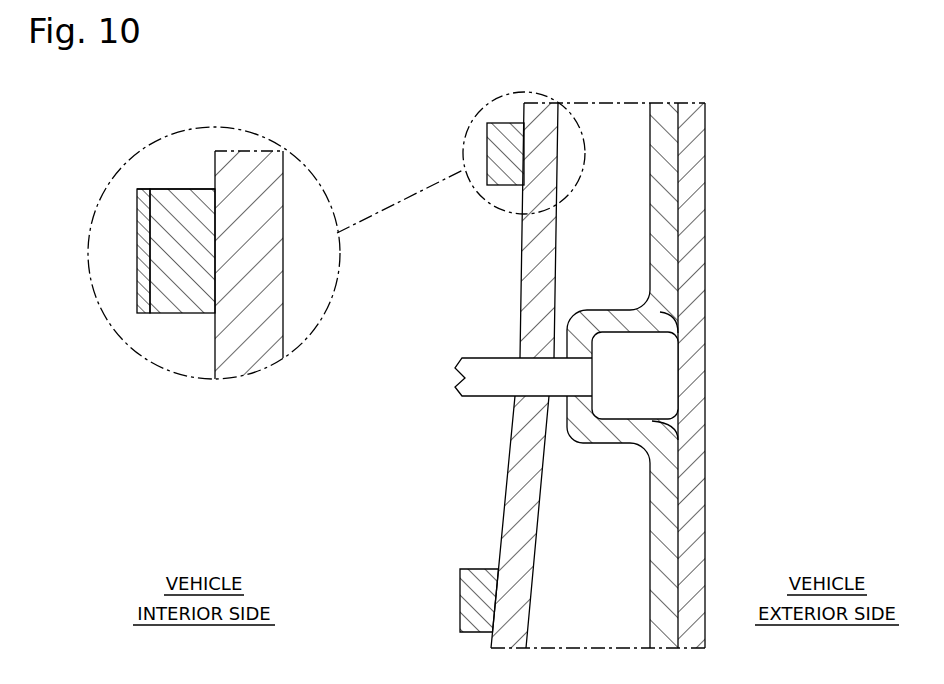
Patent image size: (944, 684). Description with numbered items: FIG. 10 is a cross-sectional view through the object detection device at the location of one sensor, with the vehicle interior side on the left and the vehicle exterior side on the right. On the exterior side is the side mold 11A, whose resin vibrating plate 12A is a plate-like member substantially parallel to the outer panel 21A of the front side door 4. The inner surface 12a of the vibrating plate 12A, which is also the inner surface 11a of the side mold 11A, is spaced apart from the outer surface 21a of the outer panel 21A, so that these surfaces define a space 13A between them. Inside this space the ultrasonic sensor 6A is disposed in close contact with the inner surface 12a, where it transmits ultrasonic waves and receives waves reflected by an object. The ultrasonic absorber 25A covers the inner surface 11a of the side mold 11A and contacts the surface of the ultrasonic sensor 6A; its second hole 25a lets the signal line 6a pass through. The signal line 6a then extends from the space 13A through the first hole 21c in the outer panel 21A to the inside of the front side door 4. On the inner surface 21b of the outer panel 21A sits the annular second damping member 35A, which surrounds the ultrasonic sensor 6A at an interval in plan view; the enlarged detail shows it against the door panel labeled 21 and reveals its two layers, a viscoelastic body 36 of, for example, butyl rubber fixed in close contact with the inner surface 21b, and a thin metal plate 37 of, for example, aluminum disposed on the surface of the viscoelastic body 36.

The vibrating plate 12A is at (775, 375).
The side mold 11A is at (694, 150).
The inner surface of the vibrating plate 12a is at (763, 375).
The inner surface of the side mold 11a is at (668, 190).
The ultrasonic absorber 25A is at (650, 124).
The second hole 25a is at (577, 383).
The outer panel 21A is at (455, 375).
The front side door 4 is at (455, 375).
The bracket (detail) 21 is at (255, 343).
The outer surface of the outer panel 21a is at (533, 514).
The inner surface of the outer panel 21b is at (510, 489).
The first hole 21c is at (533, 358).
The signal line 6a is at (508, 356).
The ultrasonic sensor 6A is at (684, 354).
The space 13A is at (613, 562).
The second damping member 35A is at (156, 182).
The viscoelastic body 36 is at (170, 315).
The thin metal plate 37 is at (142, 313).